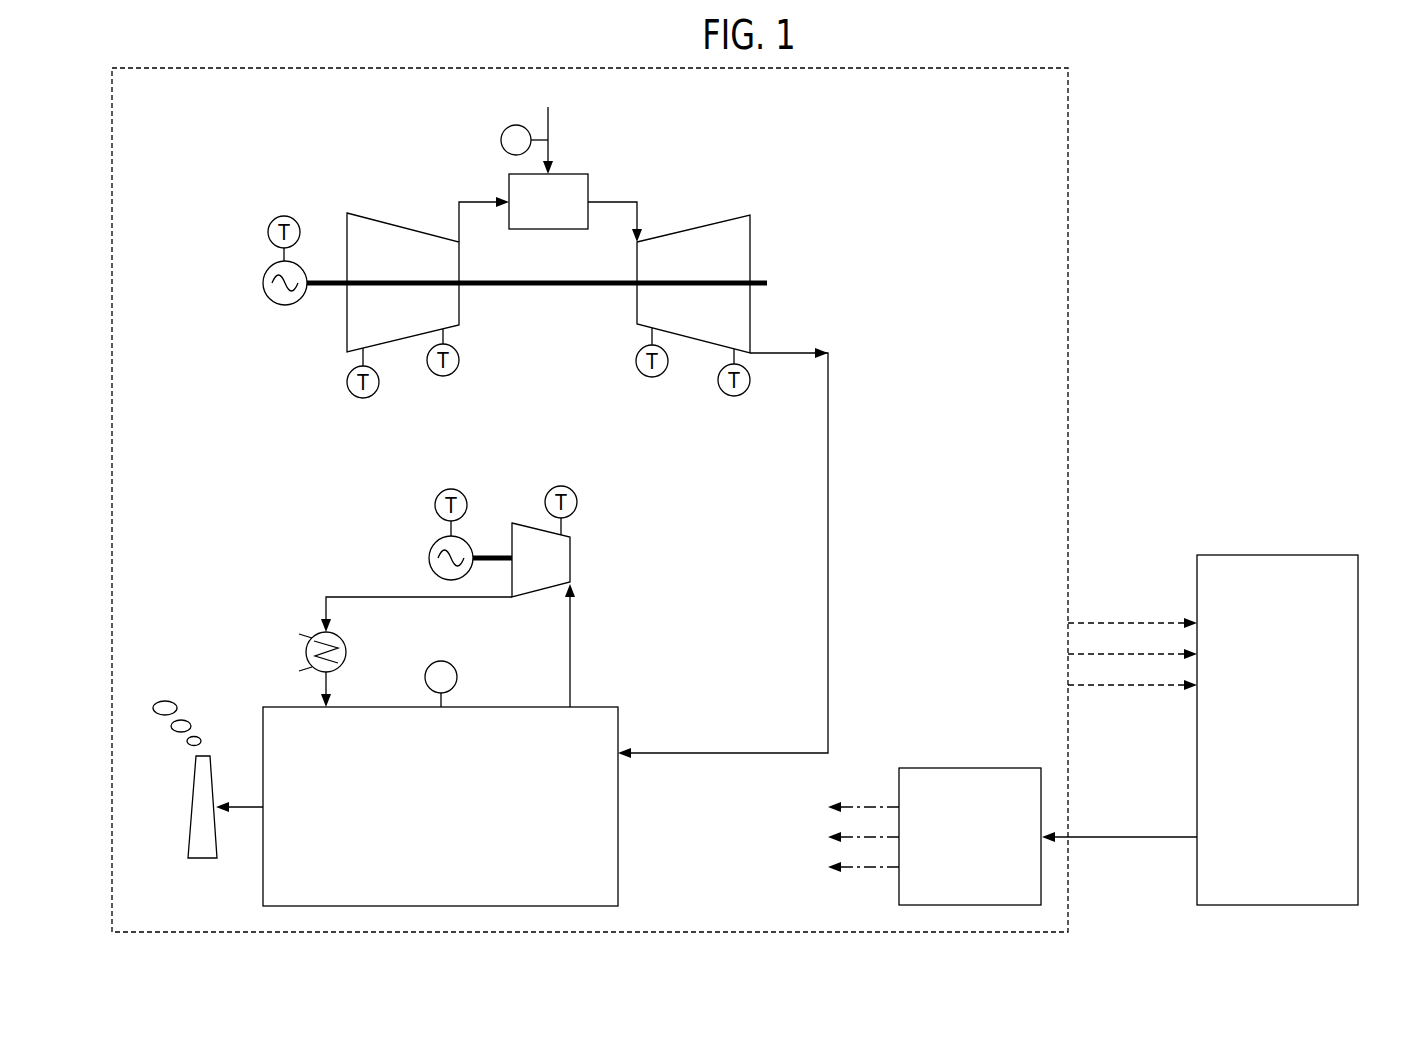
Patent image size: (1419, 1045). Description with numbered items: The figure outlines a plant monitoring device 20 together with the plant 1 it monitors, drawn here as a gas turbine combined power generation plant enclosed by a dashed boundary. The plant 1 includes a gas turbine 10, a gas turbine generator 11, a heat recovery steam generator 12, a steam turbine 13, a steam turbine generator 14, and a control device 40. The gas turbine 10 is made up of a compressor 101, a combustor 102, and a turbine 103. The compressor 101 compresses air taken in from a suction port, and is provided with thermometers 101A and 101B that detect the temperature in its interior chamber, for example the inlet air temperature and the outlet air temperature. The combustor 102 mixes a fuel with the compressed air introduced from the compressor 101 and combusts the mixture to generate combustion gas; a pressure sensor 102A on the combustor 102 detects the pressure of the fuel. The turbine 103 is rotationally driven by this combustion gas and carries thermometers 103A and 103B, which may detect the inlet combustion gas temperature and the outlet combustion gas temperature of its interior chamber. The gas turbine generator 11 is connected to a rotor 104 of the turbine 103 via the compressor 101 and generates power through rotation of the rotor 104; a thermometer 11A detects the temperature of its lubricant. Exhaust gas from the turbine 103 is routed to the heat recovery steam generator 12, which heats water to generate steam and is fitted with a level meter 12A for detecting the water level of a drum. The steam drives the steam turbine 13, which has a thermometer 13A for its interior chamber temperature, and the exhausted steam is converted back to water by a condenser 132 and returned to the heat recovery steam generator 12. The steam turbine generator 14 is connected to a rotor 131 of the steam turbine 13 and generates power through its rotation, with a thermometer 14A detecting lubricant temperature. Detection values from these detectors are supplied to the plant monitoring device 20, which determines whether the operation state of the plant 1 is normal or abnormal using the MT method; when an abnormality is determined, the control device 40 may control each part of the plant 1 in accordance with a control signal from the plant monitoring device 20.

The plant 1 is at (1069, 142).
The gas turbine 10 is at (537, 216).
The gas turbine generator 11 is at (263, 283).
The thermometer 11A is at (284, 216).
The compressor 101 is at (403, 227).
The thermometer 101A is at (363, 399).
The thermometer 101B is at (458, 365).
The combustor 102 is at (577, 173).
The pressure sensor 102A is at (501, 140).
The turbine 103 is at (689, 229).
The thermometer 103A is at (652, 378).
The thermometer 103B is at (734, 397).
The rotor 104 is at (545, 290).
The heat recovery steam generator 12 is at (619, 833).
The level meter 12A is at (441, 661).
The steam turbine 13 is at (571, 559).
The thermometer 13A is at (561, 487).
The steam turbine generator 14 is at (429, 557).
The thermometer 14A is at (451, 489).
The rotor 131 is at (487, 553).
The condenser 132 is at (346, 652).
The plant monitoring device 20 is at (1278, 555).
The control device 40 is at (970, 768).